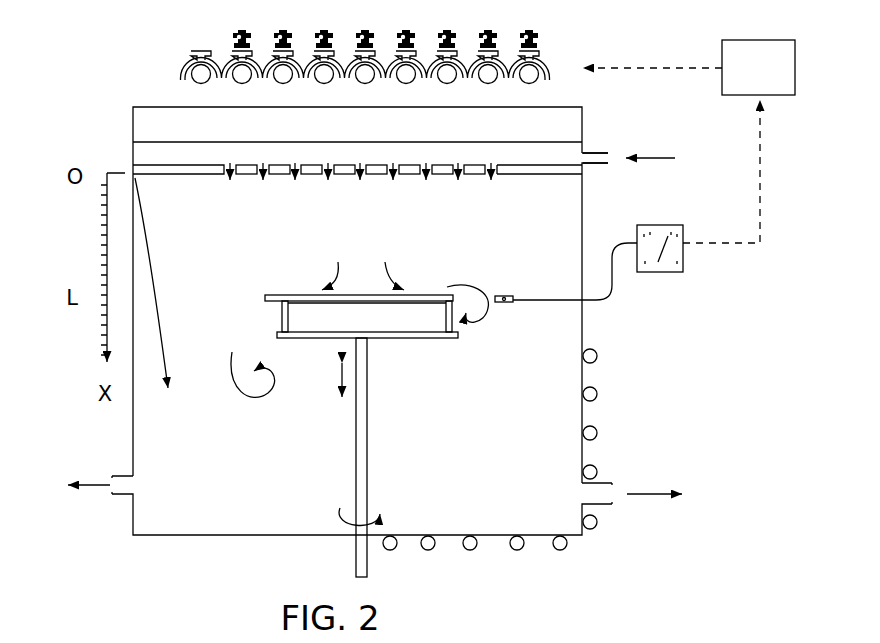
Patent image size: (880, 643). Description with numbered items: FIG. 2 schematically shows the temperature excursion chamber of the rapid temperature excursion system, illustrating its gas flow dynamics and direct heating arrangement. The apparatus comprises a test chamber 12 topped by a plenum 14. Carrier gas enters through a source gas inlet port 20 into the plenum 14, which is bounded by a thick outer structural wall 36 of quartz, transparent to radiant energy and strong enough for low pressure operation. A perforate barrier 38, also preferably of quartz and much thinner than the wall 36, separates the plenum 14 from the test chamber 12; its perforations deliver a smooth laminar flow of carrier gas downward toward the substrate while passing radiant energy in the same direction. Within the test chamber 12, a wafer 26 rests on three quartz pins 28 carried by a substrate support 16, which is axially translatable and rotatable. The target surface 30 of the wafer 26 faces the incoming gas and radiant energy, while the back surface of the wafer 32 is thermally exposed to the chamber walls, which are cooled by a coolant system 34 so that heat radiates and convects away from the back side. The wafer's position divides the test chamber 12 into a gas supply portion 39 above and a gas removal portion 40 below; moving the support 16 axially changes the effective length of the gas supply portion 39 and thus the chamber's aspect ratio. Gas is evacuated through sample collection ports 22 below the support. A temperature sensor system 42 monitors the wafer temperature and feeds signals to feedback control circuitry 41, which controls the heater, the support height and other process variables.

The test chamber 12 is at (606, 370).
The plenum 14 is at (143, 155).
The substrate support 16 is at (388, 342).
The source gas inlet port 20 is at (600, 152).
The sample collection ports 22 is at (121, 497).
The wafer 26 is at (302, 295).
The quartz pins 28 is at (282, 321).
The target surface 30 is at (362, 295).
The back surface of the wafer 32 is at (311, 303).
The coolant system 34 is at (598, 432).
The outer structural wall 36 is at (143, 120).
The perforate barrier 38 is at (192, 174).
The gas supply portion 39 is at (332, 224).
The gas removal portion 40 is at (390, 457).
The feedback control circuitry 41 is at (689, 141).
The temperature sensor system 42 is at (683, 262).